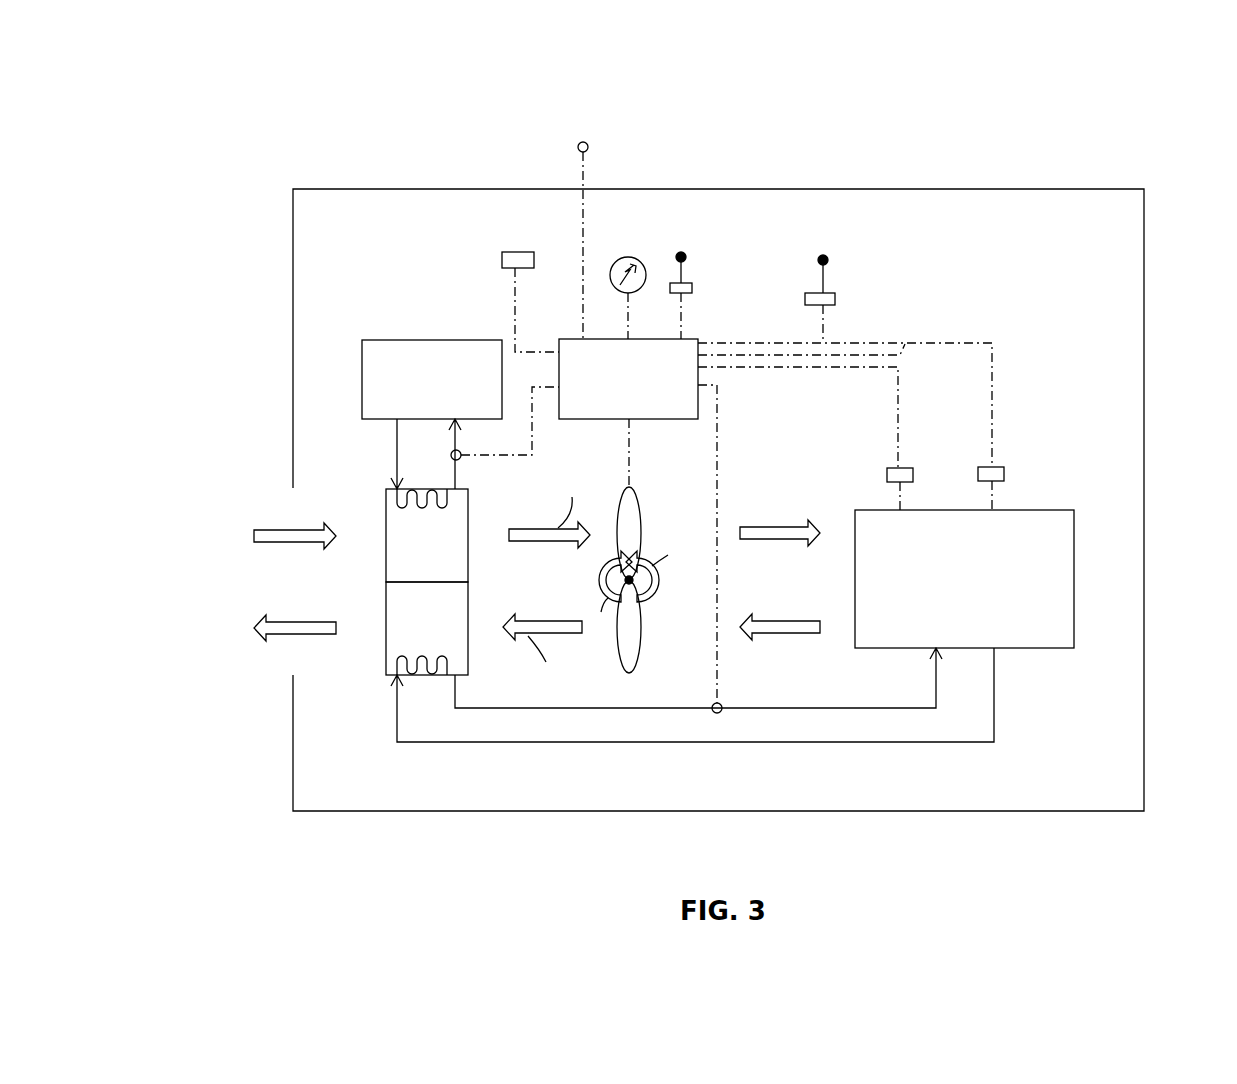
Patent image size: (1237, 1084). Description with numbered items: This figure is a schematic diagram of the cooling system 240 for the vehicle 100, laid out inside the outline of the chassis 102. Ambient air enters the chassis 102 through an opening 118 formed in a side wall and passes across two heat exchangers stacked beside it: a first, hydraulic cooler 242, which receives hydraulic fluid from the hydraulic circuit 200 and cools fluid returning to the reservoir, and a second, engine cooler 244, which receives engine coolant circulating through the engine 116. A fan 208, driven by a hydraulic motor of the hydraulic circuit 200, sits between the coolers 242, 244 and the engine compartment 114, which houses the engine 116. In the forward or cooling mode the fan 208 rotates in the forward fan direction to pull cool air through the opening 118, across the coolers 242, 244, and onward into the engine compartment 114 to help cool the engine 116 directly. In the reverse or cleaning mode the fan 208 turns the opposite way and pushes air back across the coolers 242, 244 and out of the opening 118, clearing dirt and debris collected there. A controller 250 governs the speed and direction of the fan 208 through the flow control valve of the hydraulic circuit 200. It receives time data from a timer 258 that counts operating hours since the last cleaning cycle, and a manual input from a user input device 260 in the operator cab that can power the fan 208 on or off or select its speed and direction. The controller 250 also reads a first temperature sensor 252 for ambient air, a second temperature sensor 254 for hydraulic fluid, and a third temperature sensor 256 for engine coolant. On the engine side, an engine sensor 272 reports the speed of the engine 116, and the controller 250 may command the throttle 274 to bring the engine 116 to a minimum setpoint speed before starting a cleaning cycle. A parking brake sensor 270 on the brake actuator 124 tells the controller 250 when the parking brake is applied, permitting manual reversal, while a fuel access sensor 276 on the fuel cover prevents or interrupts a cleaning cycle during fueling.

The vehicle 100 is at (1108, 164).
The chassis 102 is at (1144, 367).
The engine compartment 114 is at (1037, 495).
The engine 116 is at (964, 579).
The opening 118 is at (268, 500).
The brake actuator 124 is at (826, 258).
The hydraulic circuit 200 is at (432, 414).
The fan 208 is at (658, 504).
The cooling system 240 is at (752, 466).
The hydraulic cooler 242 is at (427, 535).
The engine cooler 244 is at (690, 662).
The controller 250 is at (775, 413).
The first temperature sensor 252 is at (582, 141).
The second temperature sensor 254 is at (462, 459).
The third temperature sensor 256 is at (712, 701).
The timer 258 is at (644, 262).
The user input device 260 is at (692, 289).
The parking brake sensor 270 is at (836, 300).
The engine sensor 272 is at (1005, 473).
The throttle 274 is at (887, 475).
The fuel access sensor 276 is at (512, 252).